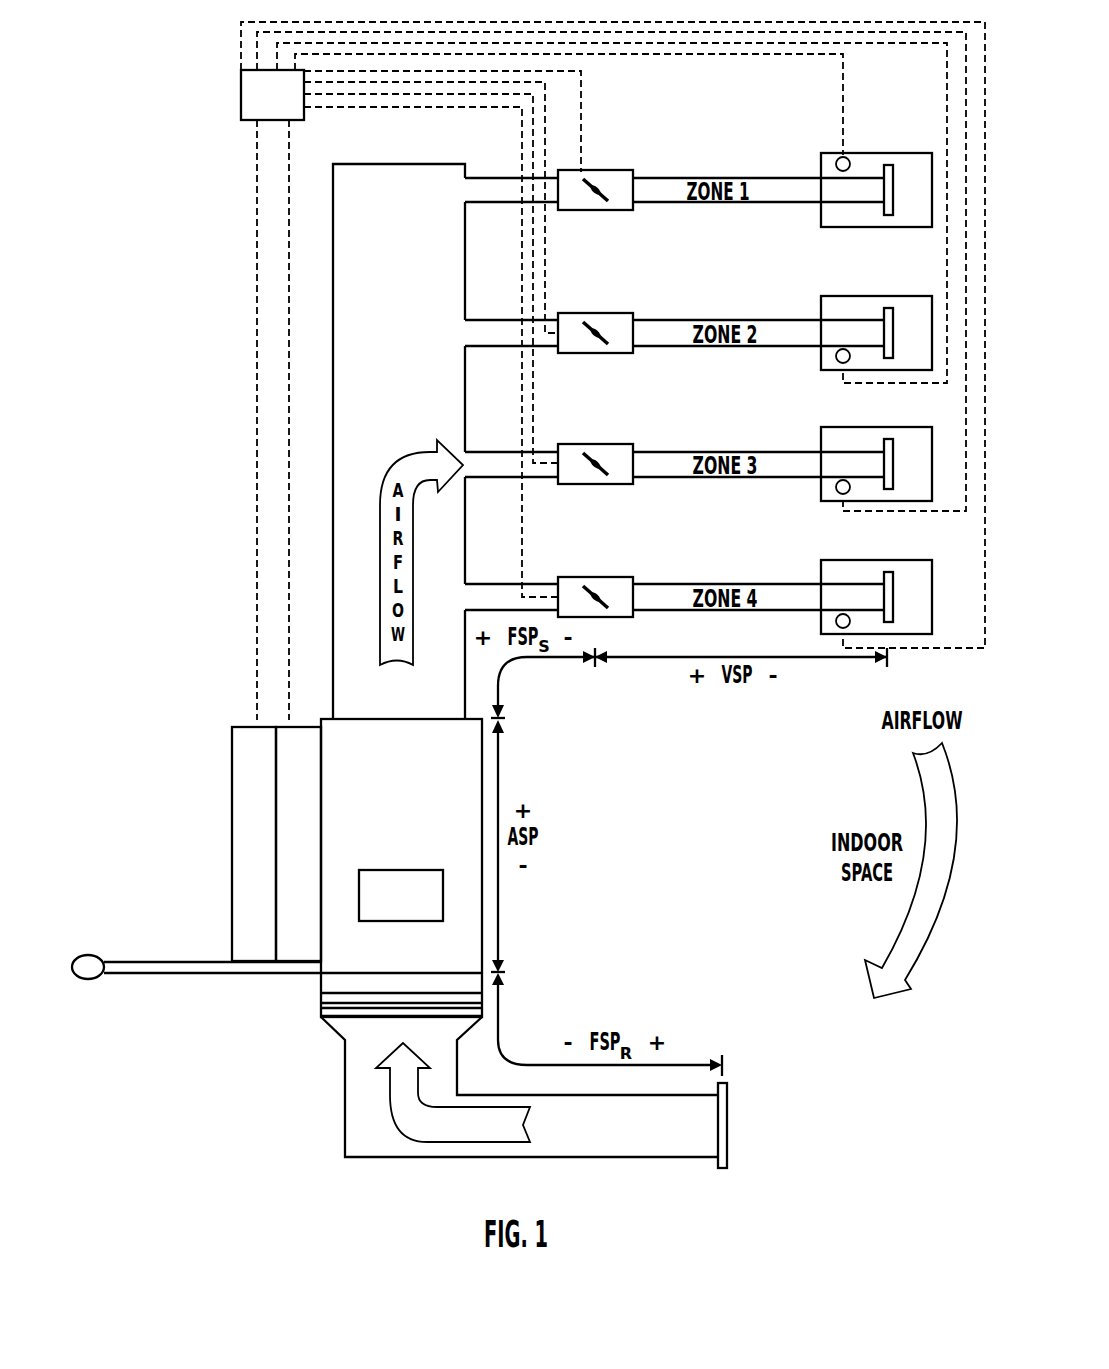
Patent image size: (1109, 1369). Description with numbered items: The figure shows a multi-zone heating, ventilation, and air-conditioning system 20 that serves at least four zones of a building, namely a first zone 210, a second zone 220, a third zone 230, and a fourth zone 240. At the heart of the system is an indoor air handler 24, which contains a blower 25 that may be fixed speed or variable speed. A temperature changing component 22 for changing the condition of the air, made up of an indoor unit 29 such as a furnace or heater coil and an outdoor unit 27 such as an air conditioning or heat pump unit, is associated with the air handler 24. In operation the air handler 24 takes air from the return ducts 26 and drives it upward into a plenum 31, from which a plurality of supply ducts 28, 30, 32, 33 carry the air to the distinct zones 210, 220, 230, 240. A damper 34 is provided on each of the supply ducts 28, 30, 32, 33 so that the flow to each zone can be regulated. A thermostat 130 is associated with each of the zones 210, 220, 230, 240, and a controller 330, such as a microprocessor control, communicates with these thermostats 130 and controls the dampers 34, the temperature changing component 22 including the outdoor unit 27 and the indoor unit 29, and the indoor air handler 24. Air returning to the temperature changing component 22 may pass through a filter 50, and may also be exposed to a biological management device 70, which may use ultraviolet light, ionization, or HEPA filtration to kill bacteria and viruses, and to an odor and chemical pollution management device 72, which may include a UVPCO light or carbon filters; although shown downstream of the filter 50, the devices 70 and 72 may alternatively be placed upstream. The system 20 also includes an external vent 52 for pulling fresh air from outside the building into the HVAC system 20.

The HVAC system 20 is at (229, 668).
The temperature changing component 22 is at (252, 775).
The indoor air handler 24 is at (330, 900).
The blower 25 is at (435, 900).
The return ducts 26 is at (345, 1122).
The outdoor unit 27 is at (252, 828).
The supply duct 28 is at (498, 193).
The indoor unit 29 is at (292, 867).
The supply duct 30 is at (498, 333).
The plenum 31 is at (386, 254).
The supply duct 32 is at (498, 464).
The supply duct 33 is at (498, 597).
The damper 34 is at (613, 182).
The filter 50 is at (321, 978).
The external vent 52 is at (85, 956).
The biological management device 70 is at (321, 1011).
The odor and chemical pollution management device 72 is at (321, 998).
The thermostat 130 is at (836, 164).
The first zone 210 is at (862, 163).
The second zone 220 is at (862, 308).
The third zone 230 is at (862, 440).
The fourth zone 240 is at (903, 573).
The controller 330 is at (253, 98).